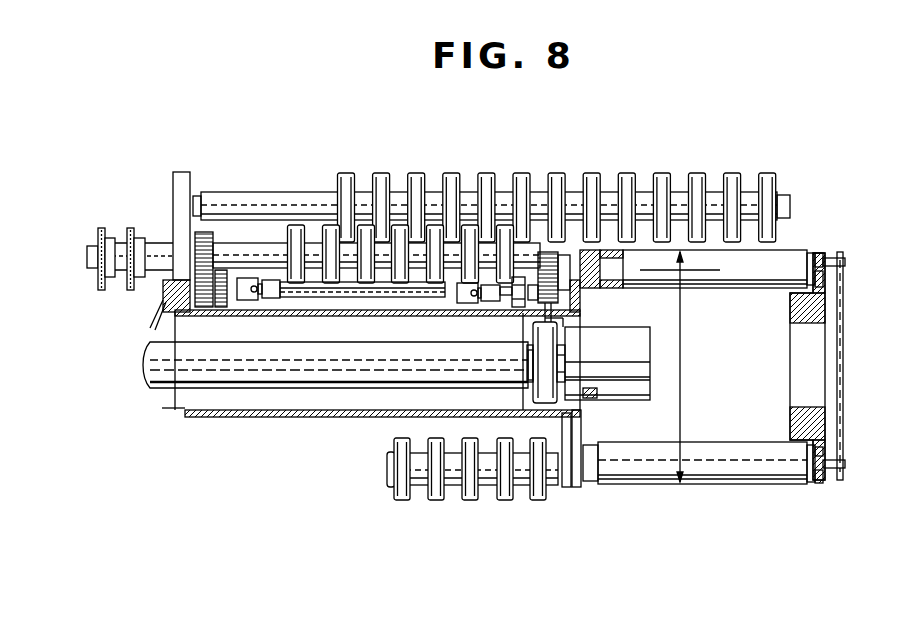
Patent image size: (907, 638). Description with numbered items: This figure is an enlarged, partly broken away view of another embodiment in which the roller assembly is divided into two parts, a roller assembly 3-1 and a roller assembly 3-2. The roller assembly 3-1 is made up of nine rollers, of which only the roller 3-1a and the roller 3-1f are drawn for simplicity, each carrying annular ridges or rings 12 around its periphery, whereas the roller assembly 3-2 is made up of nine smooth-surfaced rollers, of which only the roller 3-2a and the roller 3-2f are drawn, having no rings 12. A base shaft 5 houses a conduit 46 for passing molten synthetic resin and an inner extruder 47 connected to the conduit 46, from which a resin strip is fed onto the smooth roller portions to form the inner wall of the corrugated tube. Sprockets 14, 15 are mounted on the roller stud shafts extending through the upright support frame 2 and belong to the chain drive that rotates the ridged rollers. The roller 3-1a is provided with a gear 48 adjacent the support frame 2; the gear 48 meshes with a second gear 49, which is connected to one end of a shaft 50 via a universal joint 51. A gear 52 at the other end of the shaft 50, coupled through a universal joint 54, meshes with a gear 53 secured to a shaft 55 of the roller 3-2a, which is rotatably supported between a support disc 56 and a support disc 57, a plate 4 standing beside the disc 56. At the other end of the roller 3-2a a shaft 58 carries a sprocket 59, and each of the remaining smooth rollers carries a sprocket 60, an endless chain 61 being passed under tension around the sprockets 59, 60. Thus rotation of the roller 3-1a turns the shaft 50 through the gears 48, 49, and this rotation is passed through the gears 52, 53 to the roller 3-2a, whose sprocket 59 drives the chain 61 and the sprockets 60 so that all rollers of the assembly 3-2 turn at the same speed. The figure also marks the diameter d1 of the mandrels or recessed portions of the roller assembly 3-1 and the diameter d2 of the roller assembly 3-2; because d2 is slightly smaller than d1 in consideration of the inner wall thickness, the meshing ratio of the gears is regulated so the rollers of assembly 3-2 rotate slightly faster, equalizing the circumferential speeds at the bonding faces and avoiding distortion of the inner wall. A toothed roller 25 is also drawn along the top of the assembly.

The support frame 2 is at (181, 172).
The roller 3-1a is at (376, 346).
The gear 48 is at (206, 232).
The universal joint 51 is at (374, 255).
The shaft 50 is at (307, 283).
The annular ridges or rings 12 is at (462, 243).
The gear 53 is at (547, 252).
The toothed roller 25 is at (712, 192).
The shaft 58 is at (826, 253).
The sprocket 59 is at (847, 262).
The endless chain 61 is at (845, 330).
The sprocket 14 is at (101, 228).
The sprocket 15 is at (131, 228).
The second gear 49 is at (207, 303).
The universal joint 54 is at (477, 300).
The gear 52 is at (520, 307).
The shaft 55 is at (580, 290).
The inner extruder 47 is at (647, 338).
The roller 3-2a is at (729, 283).
The diameter of roller assembly 3-2 d2 is at (679, 367).
The diameter of mandrels of roller assembly 3-1 d1 is at (516, 361).
The support disc 57 is at (795, 420).
The conduit 46 is at (263, 383).
The base shaft 5 is at (330, 417).
The roller assembly 3-1 is at (474, 509).
The roller 3-1f is at (520, 482).
The plate 4 is at (566, 487).
The support disc 56 is at (578, 487).
The roller assembly 3-2 is at (699, 493).
The roller 3-2f is at (772, 485).
The sprocket 60 is at (847, 465).